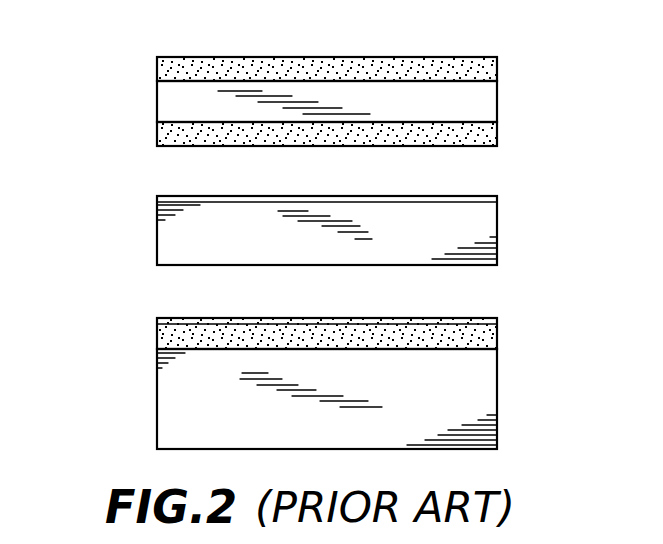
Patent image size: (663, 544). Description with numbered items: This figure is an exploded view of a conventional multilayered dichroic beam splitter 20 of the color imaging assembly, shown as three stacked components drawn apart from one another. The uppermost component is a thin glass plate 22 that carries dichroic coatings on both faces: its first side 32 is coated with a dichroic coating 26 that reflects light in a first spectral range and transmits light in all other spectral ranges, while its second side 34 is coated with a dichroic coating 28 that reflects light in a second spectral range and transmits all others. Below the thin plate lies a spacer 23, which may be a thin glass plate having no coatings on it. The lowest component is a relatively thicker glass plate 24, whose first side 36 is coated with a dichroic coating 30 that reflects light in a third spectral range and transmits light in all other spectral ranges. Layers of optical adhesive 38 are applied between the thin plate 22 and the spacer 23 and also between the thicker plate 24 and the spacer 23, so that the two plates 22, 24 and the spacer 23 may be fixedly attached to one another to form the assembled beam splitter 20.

The beam splitter 20 is at (99, 80).
The thin glass plate 22 is at (483, 110).
The spacer 23 is at (490, 237).
The thicker glass plate 24 is at (490, 415).
The dichroic coating 26 is at (488, 70).
The dichroic coating 28 is at (497, 136).
The dichroic coating 30 is at (490, 336).
The first side 32 is at (384, 80).
The second side 34 is at (175, 121).
The first side 36 is at (465, 351).
The optical adhesive 38 is at (156, 195).